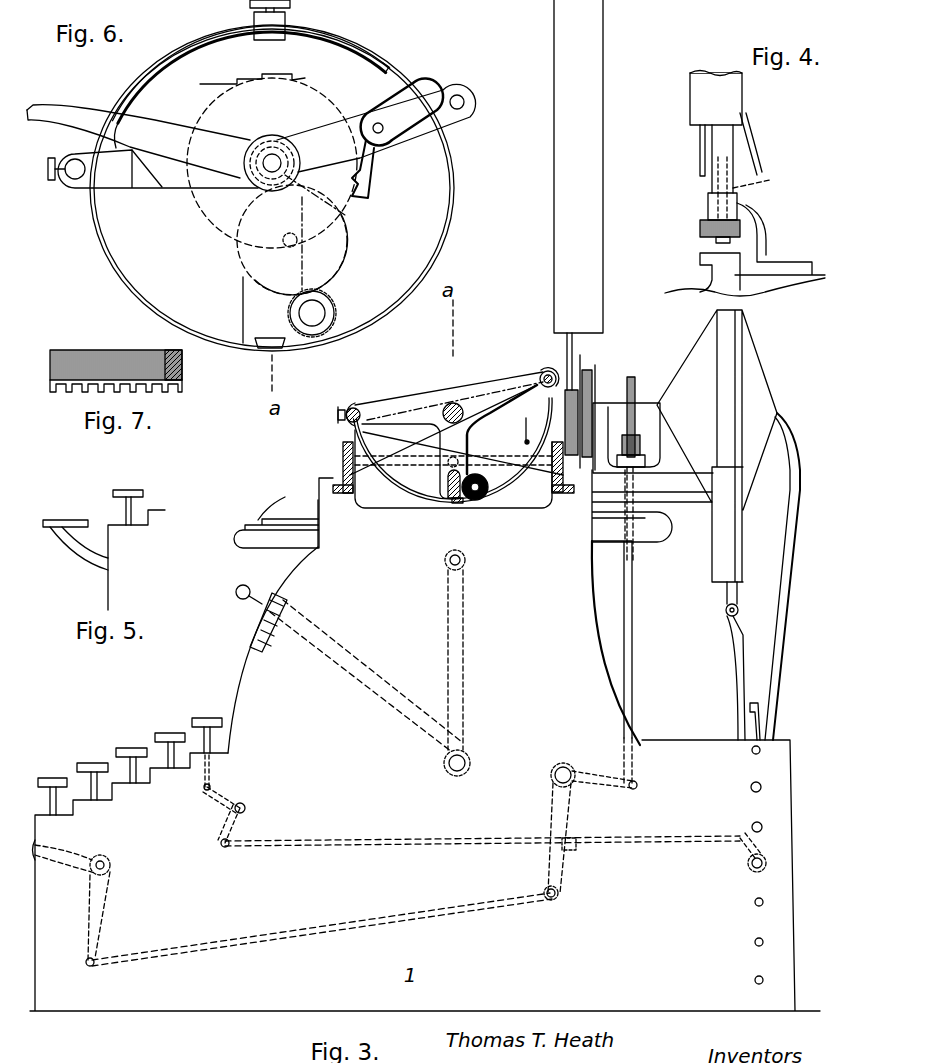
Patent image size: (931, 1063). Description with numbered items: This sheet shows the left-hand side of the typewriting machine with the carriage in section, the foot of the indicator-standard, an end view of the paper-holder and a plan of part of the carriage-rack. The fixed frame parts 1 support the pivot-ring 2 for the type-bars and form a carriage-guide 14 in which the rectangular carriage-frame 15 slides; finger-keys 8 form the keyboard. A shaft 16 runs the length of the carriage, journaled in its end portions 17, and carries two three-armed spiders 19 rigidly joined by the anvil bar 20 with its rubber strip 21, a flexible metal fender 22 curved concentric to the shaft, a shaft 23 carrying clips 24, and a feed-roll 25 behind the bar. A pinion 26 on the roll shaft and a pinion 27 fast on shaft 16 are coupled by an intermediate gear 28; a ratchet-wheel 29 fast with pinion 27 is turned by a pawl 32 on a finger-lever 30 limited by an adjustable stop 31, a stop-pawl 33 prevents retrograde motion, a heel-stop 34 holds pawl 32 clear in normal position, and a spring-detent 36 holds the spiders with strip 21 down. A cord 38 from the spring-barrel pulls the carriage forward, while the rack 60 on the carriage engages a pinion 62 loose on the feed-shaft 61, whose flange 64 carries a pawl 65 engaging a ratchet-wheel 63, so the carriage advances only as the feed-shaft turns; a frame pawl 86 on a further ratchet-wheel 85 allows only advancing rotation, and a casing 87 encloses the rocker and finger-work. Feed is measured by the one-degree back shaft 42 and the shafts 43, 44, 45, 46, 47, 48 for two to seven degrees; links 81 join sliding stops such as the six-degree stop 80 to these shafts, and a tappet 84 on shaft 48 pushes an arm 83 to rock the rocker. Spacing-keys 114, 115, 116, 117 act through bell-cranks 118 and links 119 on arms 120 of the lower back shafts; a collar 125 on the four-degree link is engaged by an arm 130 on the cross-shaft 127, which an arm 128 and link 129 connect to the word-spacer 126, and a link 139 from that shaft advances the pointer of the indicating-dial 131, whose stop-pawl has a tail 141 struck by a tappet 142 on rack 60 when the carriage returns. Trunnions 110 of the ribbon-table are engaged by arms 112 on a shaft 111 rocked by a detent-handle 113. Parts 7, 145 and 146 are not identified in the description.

In FIG. 5, the fixed frame parts 1 is at (120, 574).
In FIG. 4, the fixed frame parts 1 is at (783, 295).
In FIG. 3, the fixed frame parts 1 is at (425, 744).
In FIG. 3, the pivot-ring 2 is at (290, 540).
In FIG. 3, the rod 7 is at (45, 770).
In FIG. 5, the finger-keys 8 is at (132, 489).
In FIG. 3, the finger-keys 8 is at (55, 778).
In FIG. 4, the carriage-guide 14 is at (698, 269).
In FIG. 3, the carriage-guide 14 is at (336, 512).
In FIG. 3, the carriage-frame 15 is at (343, 448).
In FIG. 6, the shaft 16 is at (280, 162).
In FIG. 3, the shaft 16 is at (451, 403).
In FIG. 3, the end portions of the carriage 17 is at (492, 429).
In FIG. 6, the three-armed spiders 19 is at (408, 132).
In FIG. 3, the three-armed spiders 19 is at (498, 390).
In FIG. 6, the bar 20 is at (243, 302).
In FIG. 3, the bar 20 is at (447, 480).
In FIG. 6, the strip of rubber 21 is at (270, 340).
In FIG. 3, the strip of rubber 21 is at (463, 505).
In FIG. 6, the flexible metal fender 22 is at (452, 220).
In FIG. 3, the flexible metal fender 22 is at (512, 467).
In FIG. 6, the shaft 23 is at (72, 179).
In FIG. 3, the shaft 23 is at (354, 408).
In FIG. 6, the clips 24 is at (110, 256).
In FIG. 3, the clips 24 is at (394, 478).
In FIG. 6, the feed-roll 25 is at (330, 306).
In FIG. 3, the feed-roll 25 is at (486, 496).
In FIG. 6, the pinion 26 is at (326, 326).
In FIG. 6, the pinion 27 is at (272, 163).
In FIG. 6, the intermediate gear 28 is at (335, 248).
In FIG. 6, the ratchet-wheel 29 is at (303, 100).
In FIG. 6, the finger-lever 30 is at (113, 118).
In FIG. 6, the adjustable stop 31 is at (262, 22).
In FIG. 6, the pawl 32 is at (182, 100).
In FIG. 6, the stop-pawl 33 is at (373, 175).
In FIG. 6, the heel-stop 34 is at (146, 182).
In FIG. 3, the spring-detent 36 is at (343, 464).
In FIG. 3, the cord 38 is at (522, 420).
In FIG. 3, the one-degree shaft 42 is at (755, 980).
In FIG. 3, the two-degree back shaft 43 is at (755, 942).
In FIG. 3, the three-degree back shaft 44 is at (755, 903).
In FIG. 3, the four-degree back shaft 45 is at (766, 862).
In FIG. 3, the five-degree back shaft 46 is at (763, 825).
In FIG. 3, the six-degree back shaft 47 is at (762, 786).
In FIG. 3, the seven-degree back shaft 48 is at (761, 749).
In FIG. 7, the carriage-rack 60 is at (78, 360).
In FIG. 4, the carriage-rack 60 is at (700, 229).
In FIG. 3, the carriage-rack 60 is at (565, 495).
In FIG. 3, the feed-shaft 61 is at (647, 410).
In FIG. 3, the pinion 62 is at (592, 407).
In FIG. 3, the ratchet-wheel 63 is at (595, 377).
In FIG. 3, the flange 64 is at (563, 368).
In FIG. 3, the pawl 65 is at (583, 387).
In FIG. 3, the sliding stop 80 is at (726, 603).
In FIG. 3, the links 81 is at (738, 666).
In FIG. 3, the arm 83 is at (782, 660).
In FIG. 3, the tappet 84 is at (748, 707).
In FIG. 3, the ratchet-wheel 85 is at (633, 378).
In FIG. 3, the pawl 86 is at (640, 457).
In FIG. 3, the casing 87 is at (735, 385).
In FIG. 3, the trunnion 110 is at (452, 560).
In FIG. 3, the shaft 111 is at (466, 763).
In FIG. 3, the arms 112 is at (462, 680).
In FIG. 3, the detent-handle 113 is at (253, 618).
In FIG. 3, the four-degree finger-key 114 is at (210, 717).
In FIG. 3, the three-degree finger-key 115 is at (163, 733).
In FIG. 3, the two-degree finger-key 116 is at (128, 747).
In FIG. 3, the one-degree finger-key 117 is at (91, 760).
In FIG. 3, the bell-crank 118 is at (245, 820).
In FIG. 3, the links 119 is at (428, 838).
In FIG. 3, the arm 120 is at (740, 850).
In FIG. 3, the collar 125 is at (575, 848).
In FIG. 5, the spacing-key 126 is at (72, 518).
In FIG. 3, the spacing-key 126 is at (72, 860).
In FIG. 3, the cross-shaft 127 is at (565, 769).
In FIG. 3, the arm 128 is at (550, 882).
In FIG. 3, the link 129 is at (388, 916).
In FIG. 3, the arm 130 is at (555, 818).
In FIG. 4, the indicating-dial 131 is at (690, 97).
In FIG. 3, the indicating-dial 131 is at (554, 237).
In FIG. 4, the link 139 is at (760, 155).
In FIG. 3, the link 139 is at (634, 643).
In FIG. 4, the tail 141 is at (700, 137).
In FIG. 3, the tappet 142 is at (527, 373).
In FIG. 4, the line 145 is at (771, 182).
In FIG. 4, the bracket 146 is at (740, 229).